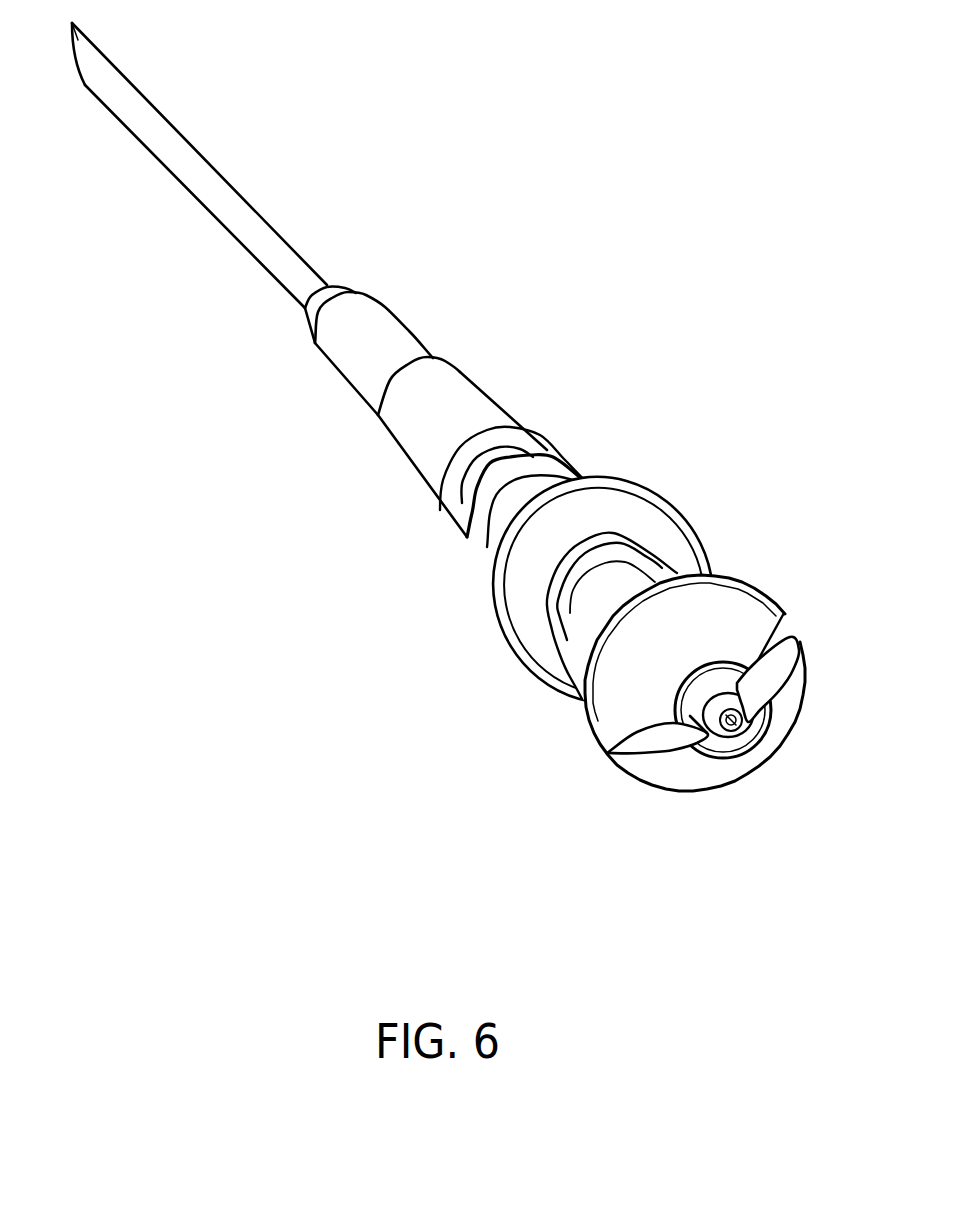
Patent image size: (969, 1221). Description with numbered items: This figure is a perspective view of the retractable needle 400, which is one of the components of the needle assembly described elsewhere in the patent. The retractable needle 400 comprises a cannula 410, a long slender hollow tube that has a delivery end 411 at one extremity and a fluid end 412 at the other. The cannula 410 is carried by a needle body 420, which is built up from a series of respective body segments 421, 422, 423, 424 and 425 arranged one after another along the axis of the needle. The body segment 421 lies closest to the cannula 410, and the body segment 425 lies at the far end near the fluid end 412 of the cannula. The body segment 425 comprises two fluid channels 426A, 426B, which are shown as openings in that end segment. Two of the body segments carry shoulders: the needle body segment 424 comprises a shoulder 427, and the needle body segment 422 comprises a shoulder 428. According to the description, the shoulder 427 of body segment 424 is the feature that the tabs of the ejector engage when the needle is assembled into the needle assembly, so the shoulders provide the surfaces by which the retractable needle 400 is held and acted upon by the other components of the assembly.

The retractable needle 400 is at (518, 195).
The cannula 410 is at (227, 153).
The delivery end 411 is at (90, 60).
The fluid end 412 is at (737, 733).
The needle body 420 is at (628, 427).
The body segment 421 is at (360, 359).
The body segment 422 is at (407, 450).
The body segment 423 is at (482, 548).
The body segment 424 is at (533, 617).
The body segment 425 is at (590, 733).
The fluid channel 426A is at (613, 743).
The fluid channel 426B is at (793, 621).
The shoulder 427 is at (683, 507).
The shoulder 428 is at (453, 508).